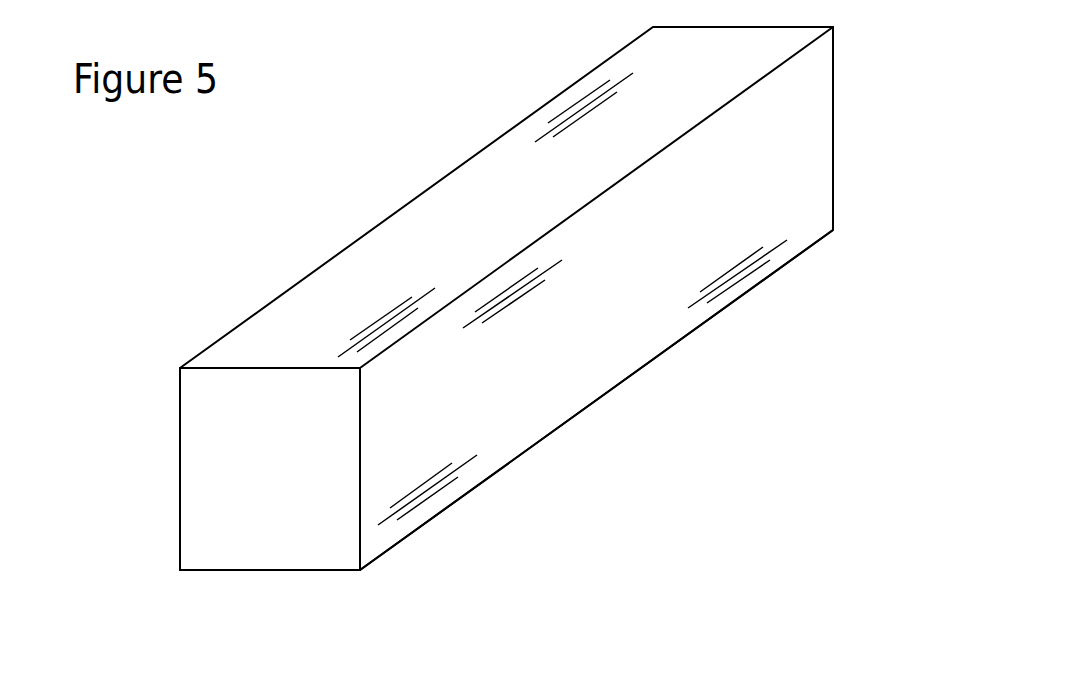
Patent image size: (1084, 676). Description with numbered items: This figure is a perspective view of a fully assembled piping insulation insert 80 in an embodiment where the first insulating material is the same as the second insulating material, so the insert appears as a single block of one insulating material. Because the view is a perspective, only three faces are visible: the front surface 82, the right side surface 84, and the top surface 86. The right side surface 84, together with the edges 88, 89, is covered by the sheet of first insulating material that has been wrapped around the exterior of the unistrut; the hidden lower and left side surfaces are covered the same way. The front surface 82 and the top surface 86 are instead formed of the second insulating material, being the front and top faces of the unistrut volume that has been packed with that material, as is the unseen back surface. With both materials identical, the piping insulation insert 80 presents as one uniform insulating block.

The piping insulation insert 80 is at (210, 260).
The front surface 82 is at (323, 457).
The right side surface 84 is at (765, 167).
The top surface 86 is at (683, 80).
The edge 88 is at (727, 110).
The edge 89 is at (417, 197).